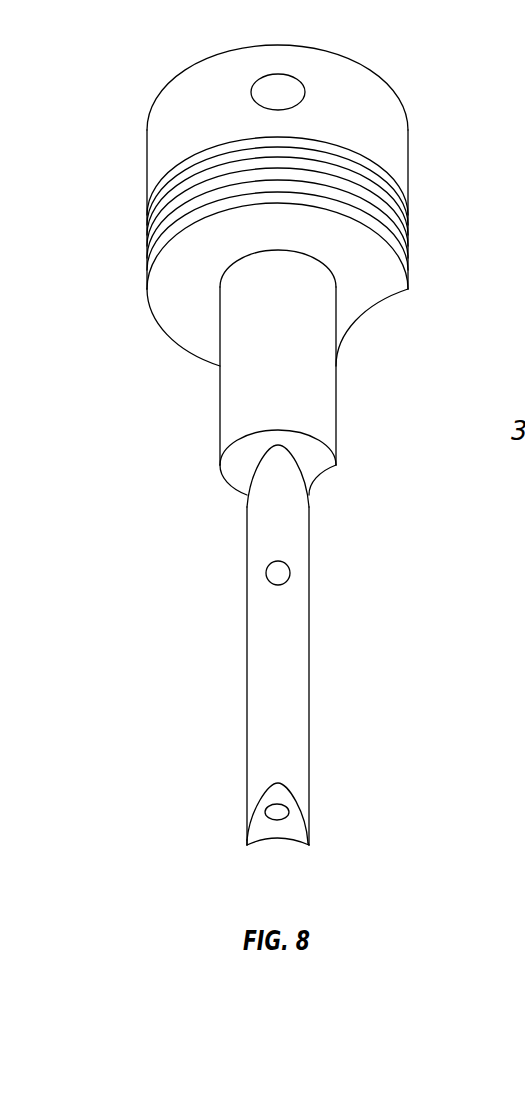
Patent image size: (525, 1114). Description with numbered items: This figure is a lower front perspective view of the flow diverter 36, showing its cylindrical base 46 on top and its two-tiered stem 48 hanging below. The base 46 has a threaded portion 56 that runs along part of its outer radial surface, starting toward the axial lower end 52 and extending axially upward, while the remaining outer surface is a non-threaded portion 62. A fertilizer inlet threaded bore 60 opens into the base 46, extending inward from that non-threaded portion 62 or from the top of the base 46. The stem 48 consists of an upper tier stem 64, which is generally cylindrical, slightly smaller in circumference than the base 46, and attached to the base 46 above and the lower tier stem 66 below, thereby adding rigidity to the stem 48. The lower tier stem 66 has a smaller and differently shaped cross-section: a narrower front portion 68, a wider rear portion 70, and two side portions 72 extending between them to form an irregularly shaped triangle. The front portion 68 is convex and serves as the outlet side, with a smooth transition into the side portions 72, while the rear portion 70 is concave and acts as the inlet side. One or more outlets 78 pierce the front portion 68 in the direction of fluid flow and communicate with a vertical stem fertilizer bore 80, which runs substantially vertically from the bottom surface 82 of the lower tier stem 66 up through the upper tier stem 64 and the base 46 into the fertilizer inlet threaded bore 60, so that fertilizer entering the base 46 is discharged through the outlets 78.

The flow diverter 36 is at (122, 42).
The cylindrical base 46 is at (452, 158).
The stem 48 is at (376, 505).
The axial lower end 52 is at (370, 313).
The threaded portion 56 is at (385, 215).
The fertilizer inlet threaded bore 60 is at (277, 88).
The non-threaded portion 62 is at (185, 125).
The upper tier stem 64 is at (312, 409).
The lower tier stem 66 is at (287, 703).
The front portion 68 is at (278, 783).
The rear portion 70 is at (273, 840).
The side portions 72 is at (303, 810).
The outlets 78 is at (280, 574).
The vertical stem fertilizer bore 80 is at (280, 818).
The bottom surface 82 is at (295, 825).